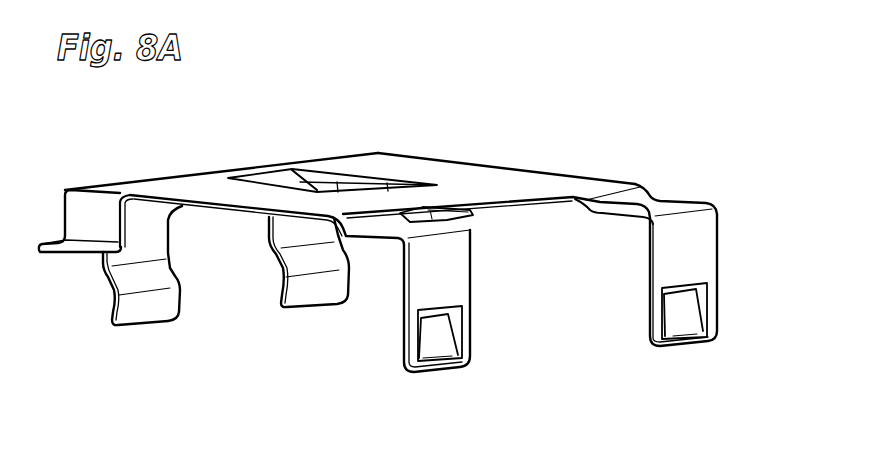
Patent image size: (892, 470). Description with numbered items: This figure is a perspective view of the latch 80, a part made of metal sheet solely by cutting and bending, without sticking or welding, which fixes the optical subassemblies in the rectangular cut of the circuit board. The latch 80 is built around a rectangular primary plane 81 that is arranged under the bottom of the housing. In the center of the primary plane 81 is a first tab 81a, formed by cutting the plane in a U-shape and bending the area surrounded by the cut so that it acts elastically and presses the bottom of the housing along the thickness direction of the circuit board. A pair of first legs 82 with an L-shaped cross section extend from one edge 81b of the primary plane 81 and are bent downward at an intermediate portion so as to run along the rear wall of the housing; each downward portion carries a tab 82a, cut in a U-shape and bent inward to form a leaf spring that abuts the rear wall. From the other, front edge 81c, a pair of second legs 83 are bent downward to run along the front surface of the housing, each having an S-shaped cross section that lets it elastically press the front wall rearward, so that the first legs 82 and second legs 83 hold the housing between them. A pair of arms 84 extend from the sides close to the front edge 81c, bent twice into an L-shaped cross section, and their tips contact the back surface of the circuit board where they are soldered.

The latch 80 is at (657, 88).
The primary plane 81 is at (480, 176).
The first tab 81a is at (291, 182).
The edge 81b is at (527, 197).
The other edge 81c is at (213, 170).
The first leg 82 is at (420, 300).
The tab 82a is at (433, 340).
The second leg 83 is at (145, 317).
The arm 84 is at (50, 253).